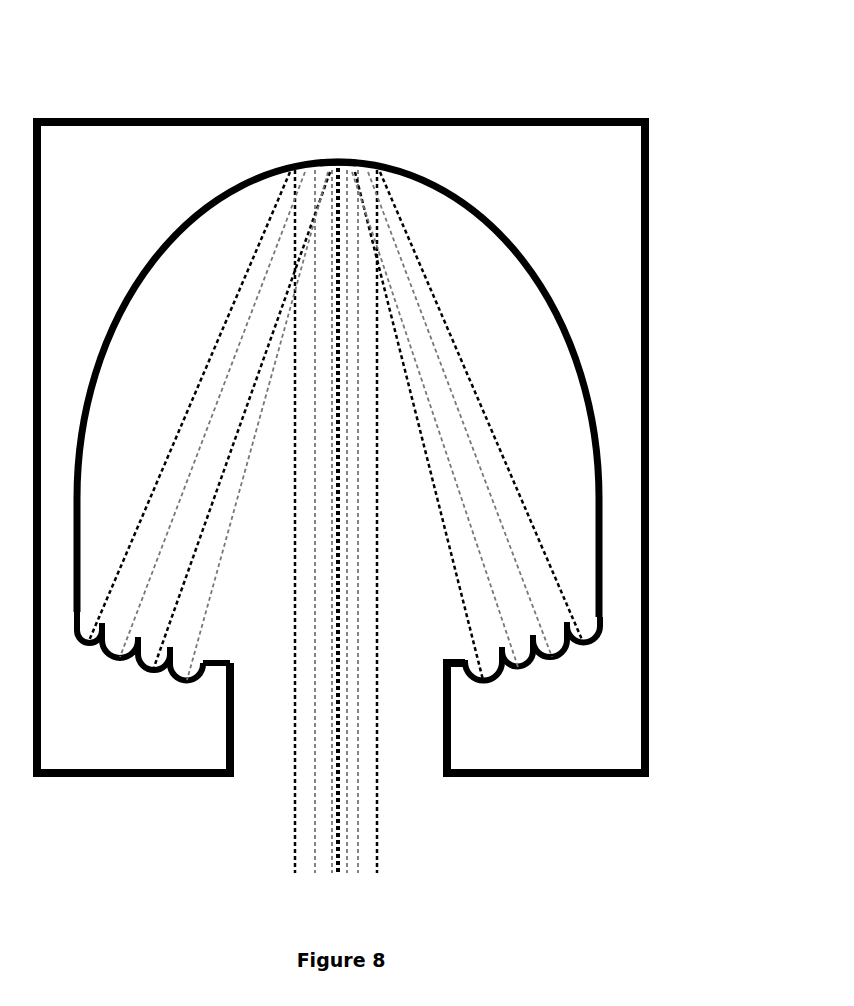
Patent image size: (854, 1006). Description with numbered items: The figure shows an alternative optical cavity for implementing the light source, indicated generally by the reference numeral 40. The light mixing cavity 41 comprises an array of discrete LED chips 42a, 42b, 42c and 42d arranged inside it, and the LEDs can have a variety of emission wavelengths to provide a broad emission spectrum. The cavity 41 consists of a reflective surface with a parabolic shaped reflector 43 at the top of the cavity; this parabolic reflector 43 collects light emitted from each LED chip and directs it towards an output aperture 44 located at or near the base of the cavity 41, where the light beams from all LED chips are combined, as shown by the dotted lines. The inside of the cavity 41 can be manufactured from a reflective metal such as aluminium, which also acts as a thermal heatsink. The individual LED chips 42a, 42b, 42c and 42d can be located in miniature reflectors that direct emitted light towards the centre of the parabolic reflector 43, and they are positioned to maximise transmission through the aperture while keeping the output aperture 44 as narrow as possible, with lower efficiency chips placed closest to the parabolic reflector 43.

The alternative optical cavity light source 40 is at (428, 58).
The light mixing cavity 41 is at (538, 273).
The LED chip 42a is at (528, 673).
The LED chip 42b is at (517, 651).
The LED chip 42c is at (550, 639).
The LED chip 42d is at (583, 630).
The parabolic reflector 43 is at (300, 158).
The output aperture 44 is at (267, 763).